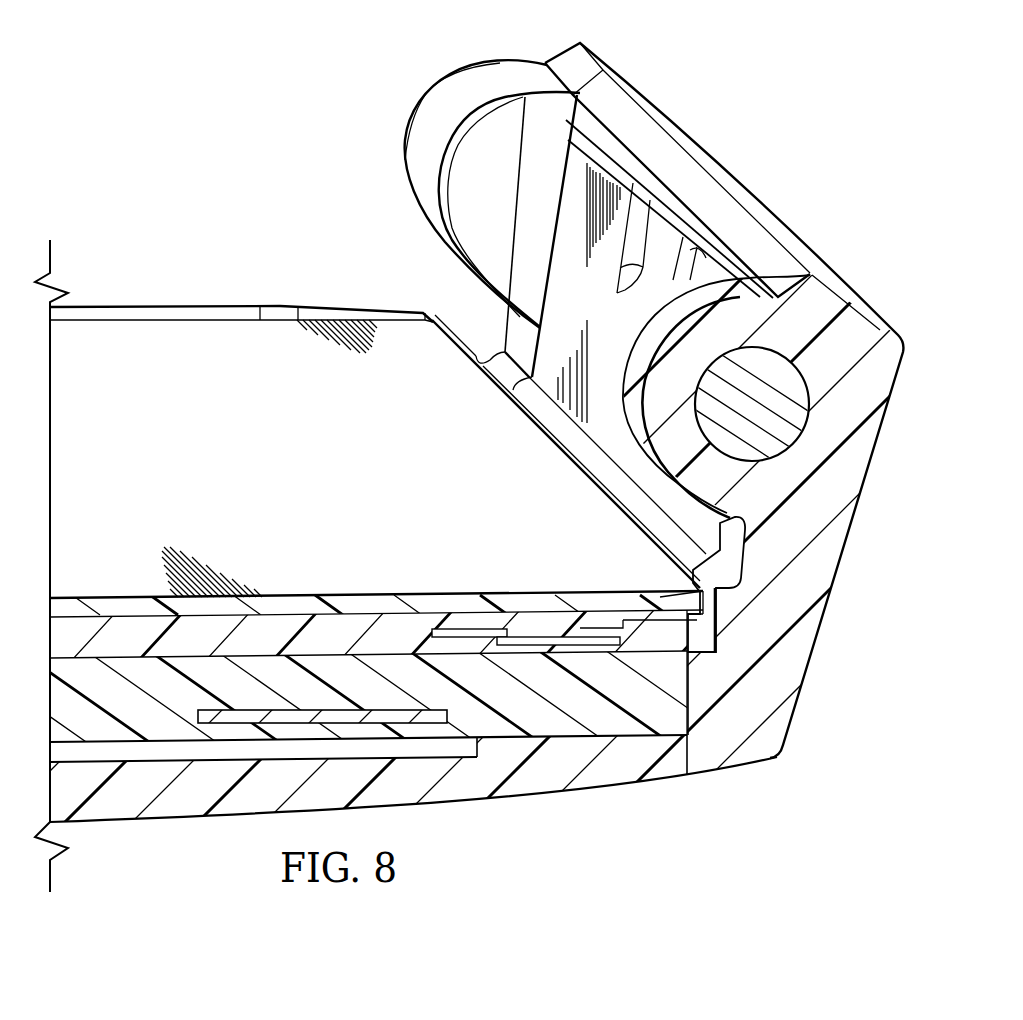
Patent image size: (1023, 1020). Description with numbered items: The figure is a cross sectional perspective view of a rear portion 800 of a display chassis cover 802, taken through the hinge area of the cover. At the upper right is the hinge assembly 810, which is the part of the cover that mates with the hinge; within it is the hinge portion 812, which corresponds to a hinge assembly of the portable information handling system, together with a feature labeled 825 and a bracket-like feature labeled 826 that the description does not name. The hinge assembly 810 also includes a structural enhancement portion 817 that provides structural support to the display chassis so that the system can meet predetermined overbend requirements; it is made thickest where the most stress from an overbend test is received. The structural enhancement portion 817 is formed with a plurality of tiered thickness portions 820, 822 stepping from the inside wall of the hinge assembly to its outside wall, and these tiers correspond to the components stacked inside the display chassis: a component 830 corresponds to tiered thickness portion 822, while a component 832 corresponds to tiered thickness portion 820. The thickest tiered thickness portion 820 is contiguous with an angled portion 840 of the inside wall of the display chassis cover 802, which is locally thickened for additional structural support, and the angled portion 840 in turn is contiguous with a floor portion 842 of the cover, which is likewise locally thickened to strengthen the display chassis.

The rear portion 800 is at (199, 86).
The display chassis cover 802 is at (157, 852).
The hinge assembly 810 is at (906, 320).
The hinge portion 812 is at (430, 82).
The structural enhancement portion 817 is at (860, 605).
The tiered thickness portion 820 is at (690, 693).
The tiered thickness portion 822 is at (717, 617).
The pivot pin 825 is at (803, 367).
The bracket 826 is at (727, 543).
The component 830 is at (142, 615).
The component 832 is at (392, 718).
The angled portion 840 is at (660, 714).
The floor portion 842 is at (505, 740).